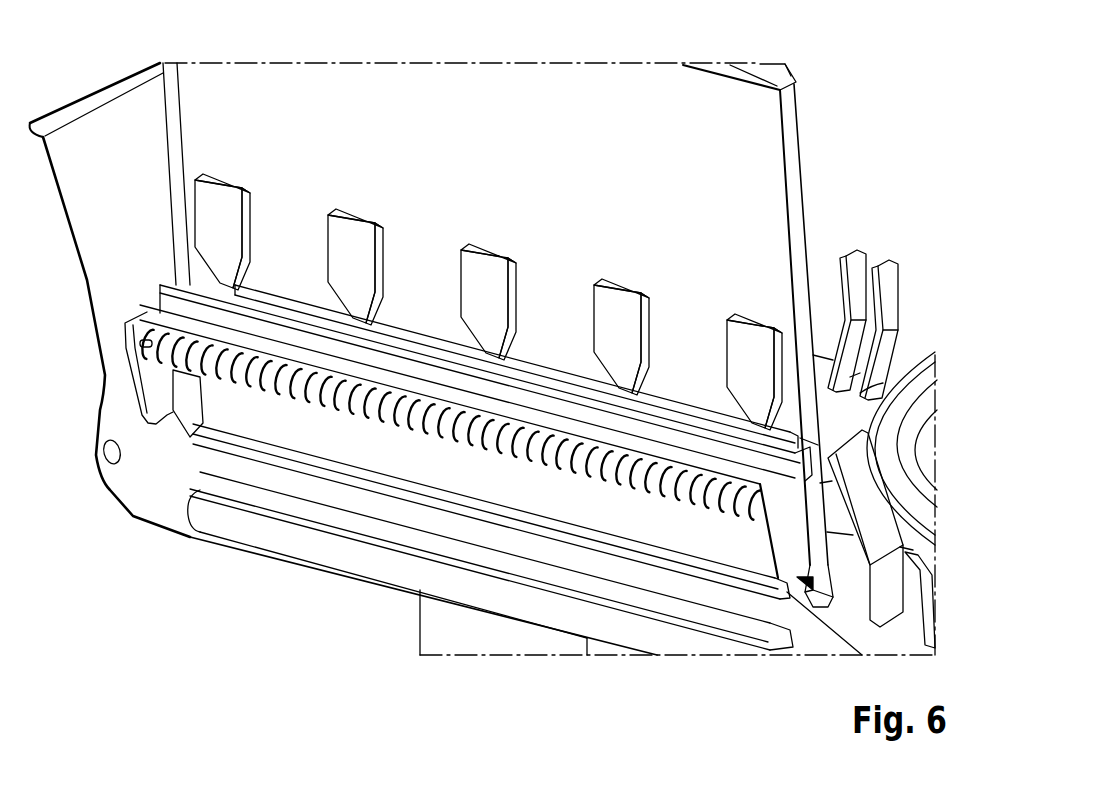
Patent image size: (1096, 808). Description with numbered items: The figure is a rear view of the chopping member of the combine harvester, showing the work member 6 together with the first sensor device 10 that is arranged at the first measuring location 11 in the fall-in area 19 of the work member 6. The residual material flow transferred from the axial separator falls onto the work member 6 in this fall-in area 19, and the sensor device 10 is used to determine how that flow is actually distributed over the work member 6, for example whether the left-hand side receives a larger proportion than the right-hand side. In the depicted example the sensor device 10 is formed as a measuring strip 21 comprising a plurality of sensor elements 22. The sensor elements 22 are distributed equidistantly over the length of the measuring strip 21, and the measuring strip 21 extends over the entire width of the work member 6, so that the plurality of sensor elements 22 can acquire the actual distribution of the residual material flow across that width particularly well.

The work member 6 is at (858, 212).
The sensor device 10 is at (421, 359).
The measuring location 11 is at (550, 327).
The fall-in area 19 is at (604, 100).
The measuring strip 21 is at (157, 273).
The sensor elements 22 is at (220, 200).